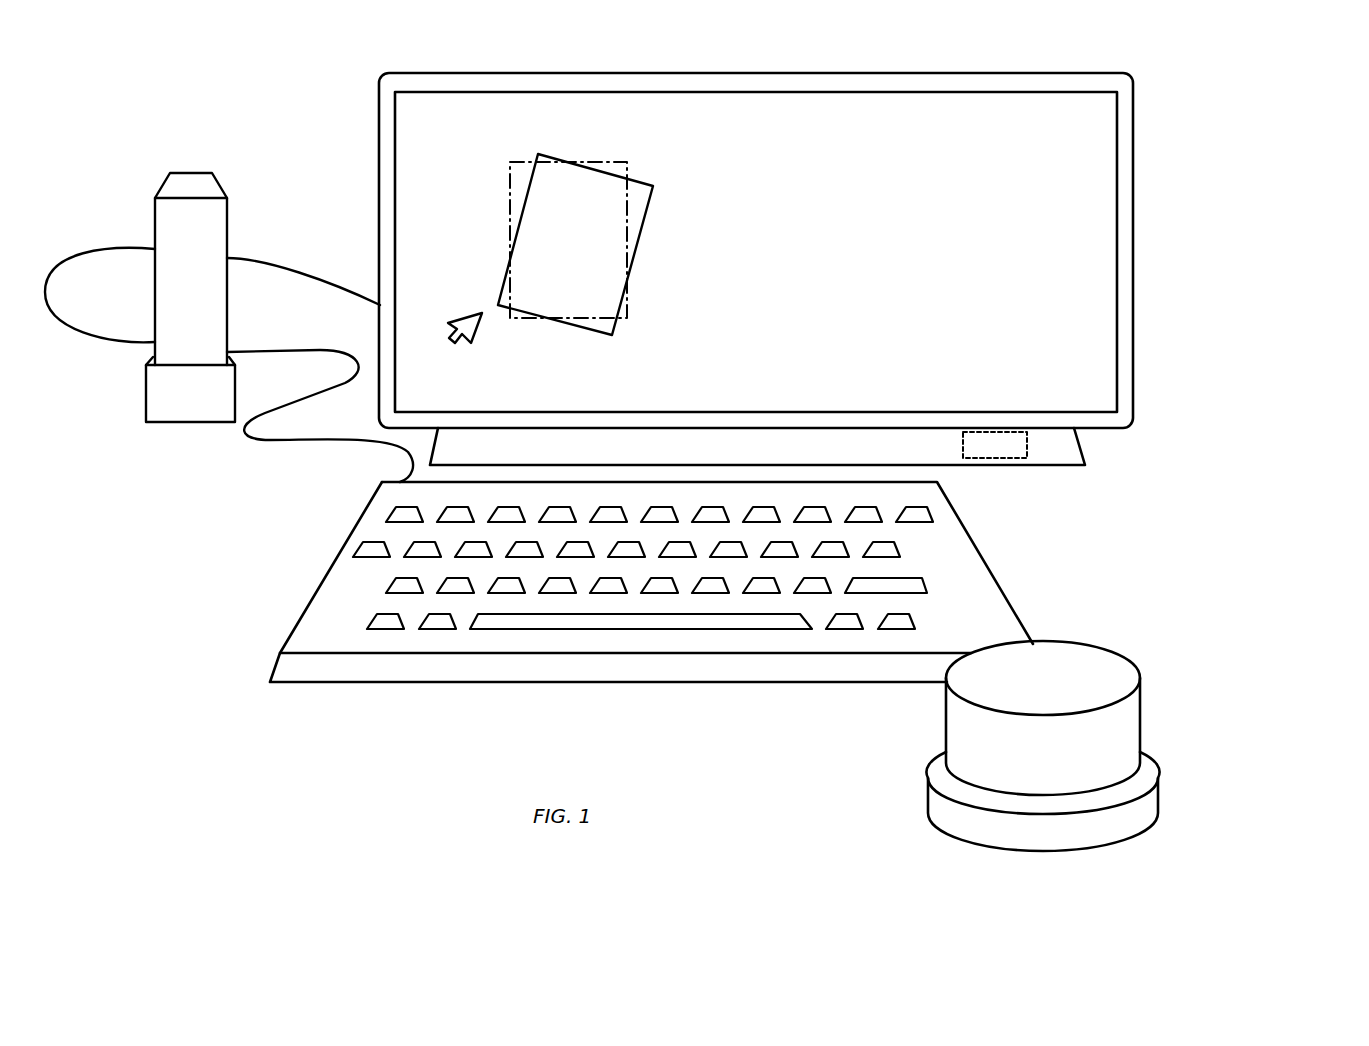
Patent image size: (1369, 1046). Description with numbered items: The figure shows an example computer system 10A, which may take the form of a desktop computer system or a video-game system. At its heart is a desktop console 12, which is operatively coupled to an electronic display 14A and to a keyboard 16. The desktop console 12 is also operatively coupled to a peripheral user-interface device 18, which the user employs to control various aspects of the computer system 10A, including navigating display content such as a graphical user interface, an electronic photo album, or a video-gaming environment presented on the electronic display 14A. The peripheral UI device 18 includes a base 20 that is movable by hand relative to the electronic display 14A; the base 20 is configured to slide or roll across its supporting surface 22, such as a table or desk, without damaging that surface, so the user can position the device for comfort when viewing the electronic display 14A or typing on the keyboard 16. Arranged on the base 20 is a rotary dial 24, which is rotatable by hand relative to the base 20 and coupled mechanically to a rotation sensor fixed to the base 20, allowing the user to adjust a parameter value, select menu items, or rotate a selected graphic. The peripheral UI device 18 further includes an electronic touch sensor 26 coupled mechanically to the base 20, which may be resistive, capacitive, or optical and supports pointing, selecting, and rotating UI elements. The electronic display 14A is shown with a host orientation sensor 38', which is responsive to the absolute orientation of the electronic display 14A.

The computer system 10A is at (698, 462).
The desktop console 12 is at (202, 294).
The electronic display 14A is at (772, 262).
The keyboard 16 is at (330, 565).
The peripheral user-interface device 18 is at (1106, 746).
The base 20 is at (1127, 832).
The supporting surface 22 is at (910, 842).
The rotary dial 24 is at (995, 754).
The electronic touch sensor 26 is at (1055, 690).
The host orientation sensor 38' is at (995, 445).